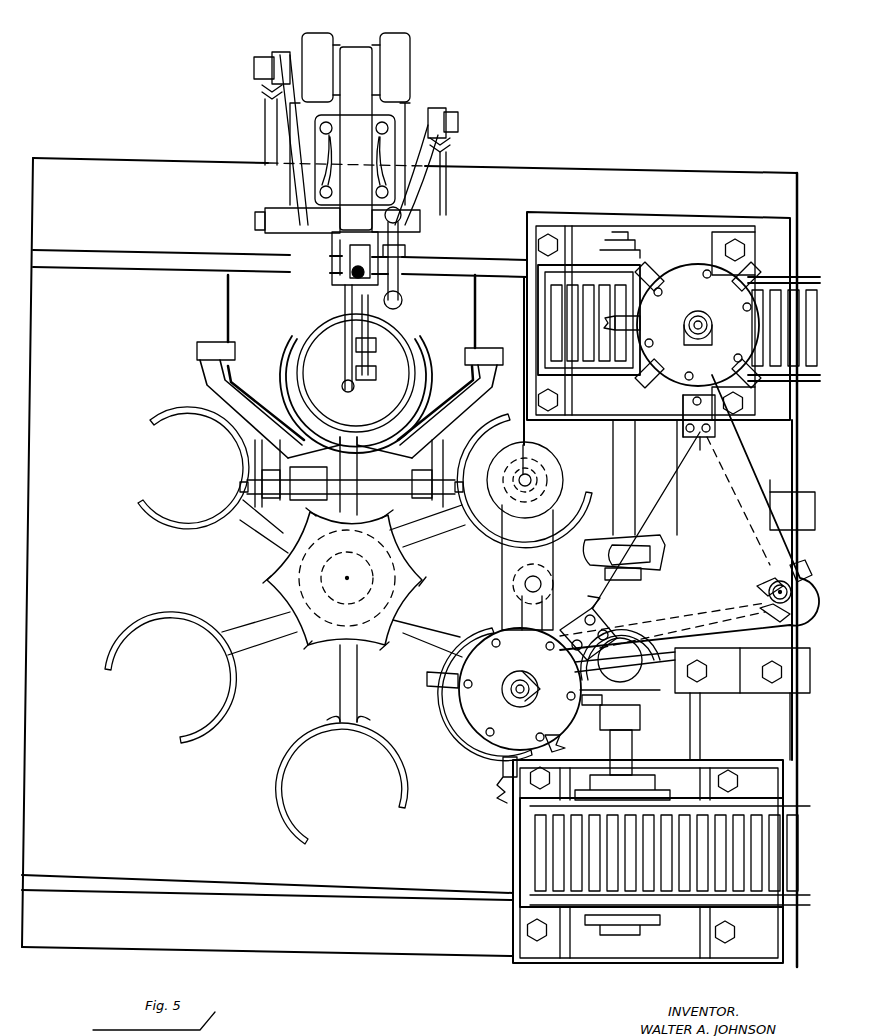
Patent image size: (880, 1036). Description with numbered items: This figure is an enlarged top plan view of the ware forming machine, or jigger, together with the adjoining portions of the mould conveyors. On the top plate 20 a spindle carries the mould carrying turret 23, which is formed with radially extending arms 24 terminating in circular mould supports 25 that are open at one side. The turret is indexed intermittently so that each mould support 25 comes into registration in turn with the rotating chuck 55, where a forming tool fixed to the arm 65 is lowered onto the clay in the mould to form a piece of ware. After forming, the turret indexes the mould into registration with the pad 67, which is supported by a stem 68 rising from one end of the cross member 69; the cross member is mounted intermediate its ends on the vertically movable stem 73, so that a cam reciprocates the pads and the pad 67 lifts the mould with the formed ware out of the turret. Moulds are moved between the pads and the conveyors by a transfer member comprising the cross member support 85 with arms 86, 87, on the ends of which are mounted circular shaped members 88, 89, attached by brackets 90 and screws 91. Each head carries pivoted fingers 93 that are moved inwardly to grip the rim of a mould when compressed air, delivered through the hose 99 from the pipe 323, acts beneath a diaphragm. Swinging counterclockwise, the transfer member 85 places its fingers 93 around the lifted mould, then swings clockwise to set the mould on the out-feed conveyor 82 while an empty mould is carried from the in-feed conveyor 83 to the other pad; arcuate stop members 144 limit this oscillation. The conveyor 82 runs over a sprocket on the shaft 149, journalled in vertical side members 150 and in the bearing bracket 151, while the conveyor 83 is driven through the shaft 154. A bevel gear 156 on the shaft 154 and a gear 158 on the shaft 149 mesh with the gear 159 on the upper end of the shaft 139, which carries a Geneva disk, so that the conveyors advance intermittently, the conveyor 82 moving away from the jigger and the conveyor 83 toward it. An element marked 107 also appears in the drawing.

The top plate 20 is at (409, 562).
The mould carrying turret 23 is at (344, 579).
The radially extending arms 24 is at (262, 534).
The circular mould supports 25 is at (178, 522).
The chuck 55 is at (356, 383).
The arm 65 is at (362, 280).
The pad 67 is at (562, 465).
The stem 68 is at (530, 476).
The cross member 69 is at (510, 566).
The stem 73 is at (542, 582).
The out-feed conveyor 82 is at (770, 285).
The in-feed conveyor 83 is at (675, 812).
The cross member support 85 is at (689, 512).
The arm 86 is at (680, 436).
The arm 87 is at (602, 628).
The circular shaped member 88 is at (698, 325).
The circular shaped member 89 is at (520, 689).
The brackets 90 is at (682, 407).
The screws 91 is at (599, 596).
The fingers 93 is at (461, 736).
The hose 99 is at (640, 323).
The bracket 107 is at (792, 520).
The shaft 139 is at (655, 652).
The arcuate shaped stop members 144 is at (742, 701).
The shaft 149 is at (636, 462).
The vertical side members 150 is at (565, 262).
The bearing bracket 151 is at (628, 536).
The shaft 154 is at (632, 748).
The bevel gear 156 is at (640, 716).
The gear 158 is at (640, 576).
The gear 159 is at (650, 685).
The pipe 323 is at (763, 614).